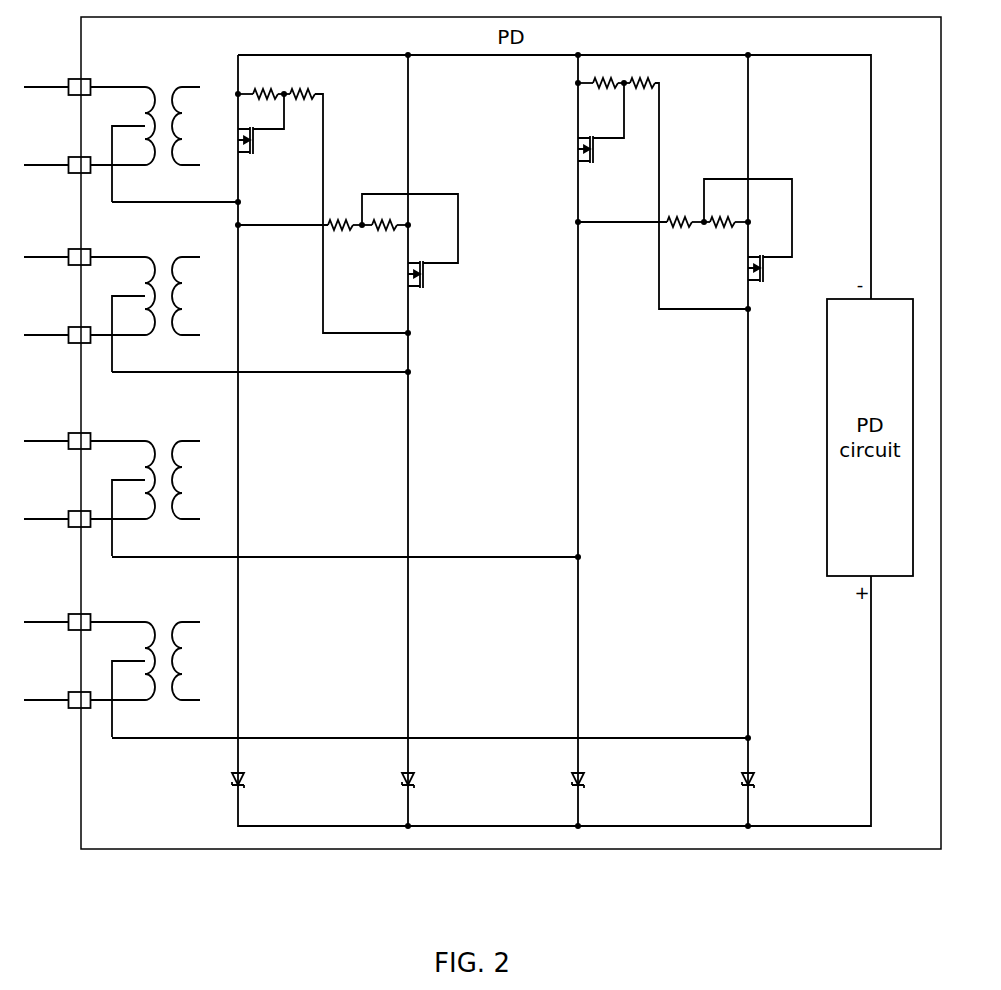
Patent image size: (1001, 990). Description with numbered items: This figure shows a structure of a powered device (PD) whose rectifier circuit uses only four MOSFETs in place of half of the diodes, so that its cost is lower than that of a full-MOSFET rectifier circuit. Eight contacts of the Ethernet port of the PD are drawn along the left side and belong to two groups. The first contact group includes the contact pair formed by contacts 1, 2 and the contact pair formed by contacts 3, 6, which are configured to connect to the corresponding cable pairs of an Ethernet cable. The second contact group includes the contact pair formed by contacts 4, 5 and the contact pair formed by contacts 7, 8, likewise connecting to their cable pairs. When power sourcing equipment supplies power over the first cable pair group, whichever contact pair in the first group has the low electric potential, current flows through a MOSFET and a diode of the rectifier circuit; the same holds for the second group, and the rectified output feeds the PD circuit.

The contact 1 is at (84, 77).
The contact 2 is at (84, 155).
The contact 3 is at (84, 247).
The contact 4 is at (84, 431).
The contact 5 is at (84, 509).
The contact 6 is at (84, 325).
The contact 7 is at (84, 612).
The contact 8 is at (84, 690).